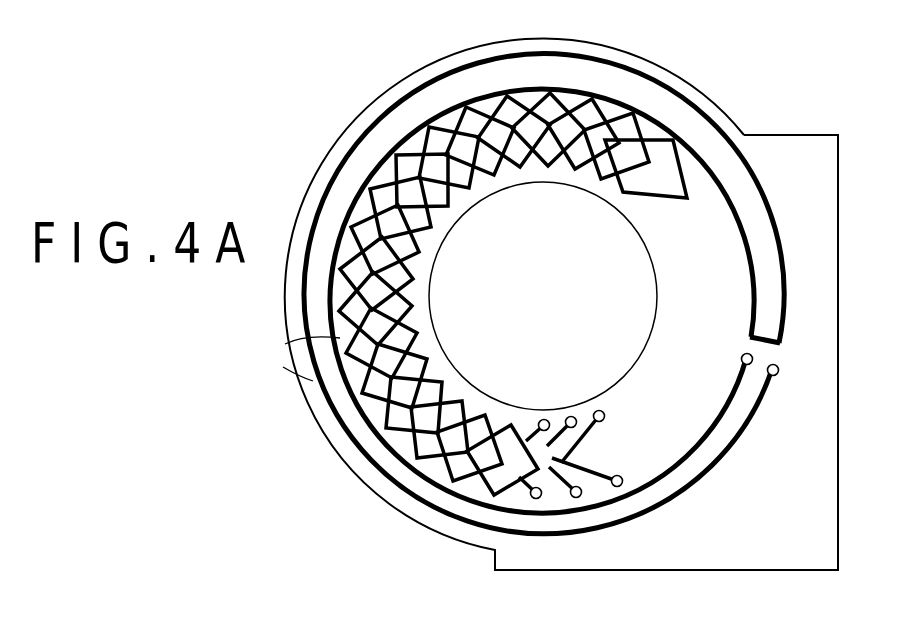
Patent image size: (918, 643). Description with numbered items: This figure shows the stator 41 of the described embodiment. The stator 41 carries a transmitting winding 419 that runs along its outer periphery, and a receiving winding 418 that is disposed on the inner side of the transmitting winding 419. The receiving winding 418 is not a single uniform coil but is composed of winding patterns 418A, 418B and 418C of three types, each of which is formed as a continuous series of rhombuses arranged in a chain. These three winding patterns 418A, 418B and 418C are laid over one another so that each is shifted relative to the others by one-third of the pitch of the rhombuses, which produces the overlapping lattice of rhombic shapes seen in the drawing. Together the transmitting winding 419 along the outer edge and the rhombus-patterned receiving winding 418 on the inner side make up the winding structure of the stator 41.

The stator 41 is at (391, 86).
The receiving winding 418 is at (855, 102).
The winding pattern 418A is at (605, 112).
The winding pattern 418B is at (637, 127).
The winding pattern 418C is at (683, 156).
The transmitting winding 419 is at (297, 378).